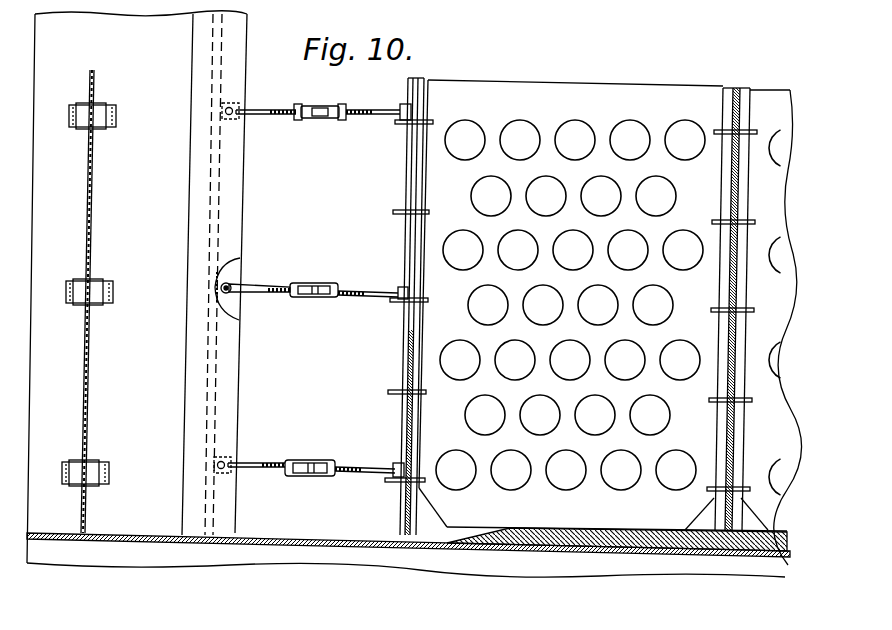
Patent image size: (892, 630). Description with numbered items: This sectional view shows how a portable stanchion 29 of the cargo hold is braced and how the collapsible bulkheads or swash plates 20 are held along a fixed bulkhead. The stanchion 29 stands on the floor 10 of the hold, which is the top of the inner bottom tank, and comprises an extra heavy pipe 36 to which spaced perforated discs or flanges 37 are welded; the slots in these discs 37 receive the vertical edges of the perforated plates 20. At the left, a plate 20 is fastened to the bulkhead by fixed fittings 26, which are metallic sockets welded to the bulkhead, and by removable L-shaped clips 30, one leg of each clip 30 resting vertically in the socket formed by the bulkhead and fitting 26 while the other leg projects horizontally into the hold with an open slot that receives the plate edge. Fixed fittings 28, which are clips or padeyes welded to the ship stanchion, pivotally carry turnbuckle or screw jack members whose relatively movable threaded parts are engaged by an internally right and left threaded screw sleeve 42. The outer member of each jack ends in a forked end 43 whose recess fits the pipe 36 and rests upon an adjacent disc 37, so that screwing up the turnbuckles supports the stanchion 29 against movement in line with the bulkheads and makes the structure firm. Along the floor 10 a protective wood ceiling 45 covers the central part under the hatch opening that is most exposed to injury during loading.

The floor 10 is at (333, 546).
The collapsible bulkhead or swash plate 20 is at (90, 194).
The fixed fitting 26 is at (117, 117).
The fixed fitting 28 is at (235, 115).
The stanchion 29 is at (404, 187).
The removable clip 30 is at (104, 105).
The pipe 36 is at (419, 80).
The disc or flange 37 is at (400, 124).
The screw sleeve 42 is at (328, 99).
The forked end 43 is at (403, 110).
The wood ceiling 45 is at (650, 558).